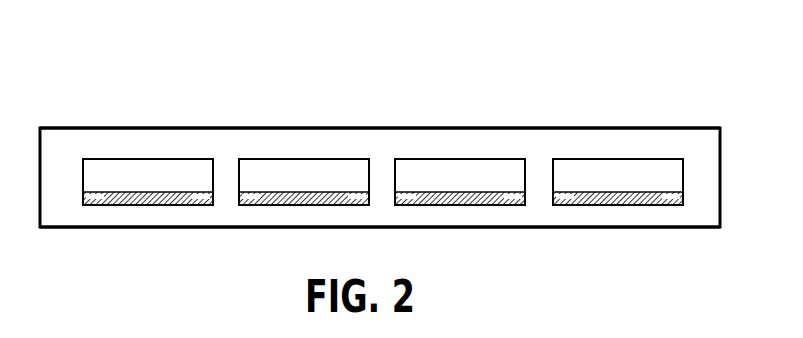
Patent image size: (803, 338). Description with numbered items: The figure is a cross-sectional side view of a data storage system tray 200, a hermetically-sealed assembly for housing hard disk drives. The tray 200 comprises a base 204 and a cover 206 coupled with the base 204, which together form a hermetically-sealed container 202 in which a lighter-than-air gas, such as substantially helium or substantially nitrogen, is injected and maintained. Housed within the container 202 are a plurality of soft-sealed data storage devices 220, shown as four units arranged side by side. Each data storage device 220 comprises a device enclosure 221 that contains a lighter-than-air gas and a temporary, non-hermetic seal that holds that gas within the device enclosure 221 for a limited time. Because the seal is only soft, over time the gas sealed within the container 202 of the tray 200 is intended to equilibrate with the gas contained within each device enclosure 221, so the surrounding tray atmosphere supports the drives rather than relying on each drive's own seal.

The data storage system tray 200 is at (131, 36).
The hermetically-sealed container 202 is at (108, 142).
The base 204 is at (602, 229).
The cover 206 is at (583, 128).
The data storage devices 220 is at (565, 158).
The device enclosure 221 is at (140, 172).